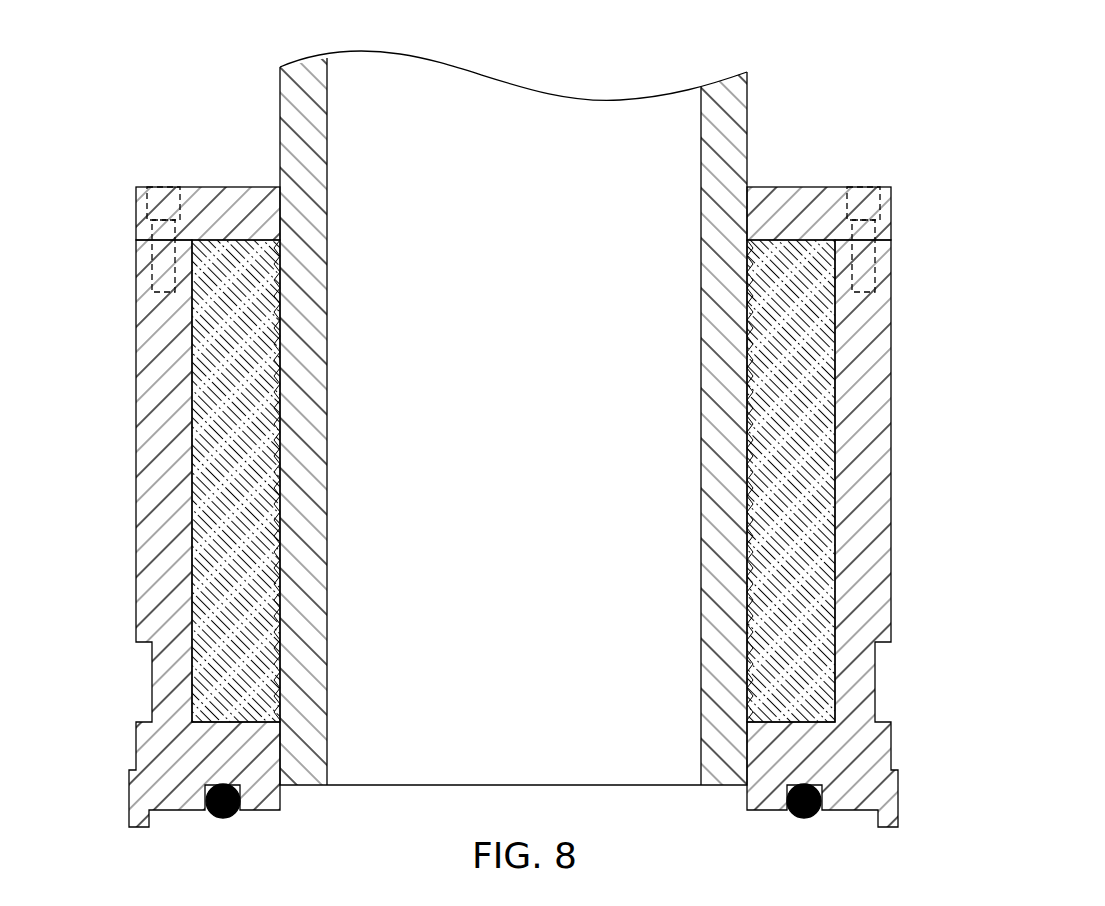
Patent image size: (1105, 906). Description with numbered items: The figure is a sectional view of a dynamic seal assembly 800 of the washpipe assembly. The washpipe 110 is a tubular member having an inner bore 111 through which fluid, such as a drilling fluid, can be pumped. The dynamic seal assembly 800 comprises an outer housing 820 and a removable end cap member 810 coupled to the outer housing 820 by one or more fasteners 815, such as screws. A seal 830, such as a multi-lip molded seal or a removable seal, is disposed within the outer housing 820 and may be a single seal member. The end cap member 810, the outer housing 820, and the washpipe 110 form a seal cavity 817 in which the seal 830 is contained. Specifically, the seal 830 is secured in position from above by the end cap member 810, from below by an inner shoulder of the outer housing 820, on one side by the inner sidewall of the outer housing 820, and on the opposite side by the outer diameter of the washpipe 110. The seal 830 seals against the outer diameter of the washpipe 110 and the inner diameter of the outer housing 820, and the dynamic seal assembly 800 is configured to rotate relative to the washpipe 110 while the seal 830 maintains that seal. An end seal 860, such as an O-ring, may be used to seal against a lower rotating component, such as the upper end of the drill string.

The dynamic seal assembly 800 is at (997, 112).
The washpipe 110 is at (747, 105).
The inner bore 111 is at (327, 78).
The end cap member 810 is at (891, 210).
The fasteners 815 is at (860, 195).
The outer housing 820 is at (891, 358).
The seal 830 is at (808, 443).
The seal cavity 817 is at (797, 723).
The end seal 860 is at (803, 820).